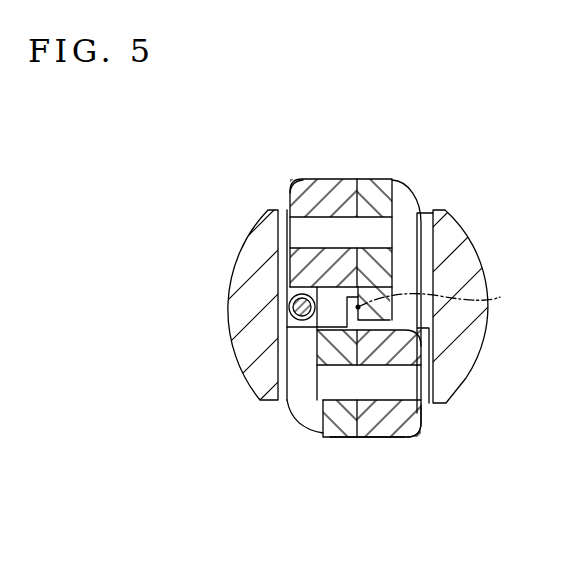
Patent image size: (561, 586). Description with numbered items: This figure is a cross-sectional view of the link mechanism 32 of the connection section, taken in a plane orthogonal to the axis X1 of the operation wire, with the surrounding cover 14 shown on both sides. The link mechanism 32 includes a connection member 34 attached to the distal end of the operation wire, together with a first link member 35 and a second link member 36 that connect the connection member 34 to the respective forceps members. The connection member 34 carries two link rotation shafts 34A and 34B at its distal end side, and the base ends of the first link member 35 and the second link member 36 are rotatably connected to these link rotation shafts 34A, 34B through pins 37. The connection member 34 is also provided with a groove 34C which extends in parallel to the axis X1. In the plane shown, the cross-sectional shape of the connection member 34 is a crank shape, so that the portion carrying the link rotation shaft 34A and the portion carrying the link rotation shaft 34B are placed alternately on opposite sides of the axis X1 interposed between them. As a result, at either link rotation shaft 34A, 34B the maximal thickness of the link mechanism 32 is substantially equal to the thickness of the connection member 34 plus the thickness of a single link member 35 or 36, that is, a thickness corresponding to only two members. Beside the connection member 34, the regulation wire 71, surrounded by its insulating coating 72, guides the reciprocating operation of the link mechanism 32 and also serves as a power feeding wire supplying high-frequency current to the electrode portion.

The cover 14 is at (247, 263).
The link mechanism 32 is at (361, 458).
The connection member 34 is at (380, 193).
The link rotation shaft 34A is at (331, 168).
The link rotation shaft 34B is at (432, 440).
The groove 34C is at (318, 327).
The first link member 35 is at (293, 180).
The second link member 36 is at (390, 422).
The pin 37 is at (371, 222).
The regulation wire 71 is at (292, 300).
The insulating coating 72 is at (290, 322).
The axis of the operation wire X1 is at (446, 297).